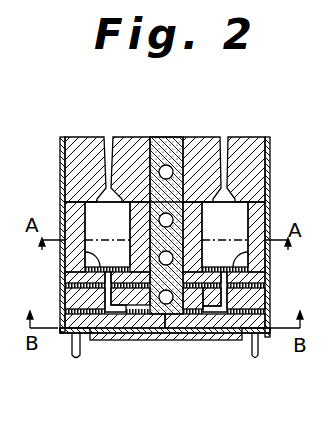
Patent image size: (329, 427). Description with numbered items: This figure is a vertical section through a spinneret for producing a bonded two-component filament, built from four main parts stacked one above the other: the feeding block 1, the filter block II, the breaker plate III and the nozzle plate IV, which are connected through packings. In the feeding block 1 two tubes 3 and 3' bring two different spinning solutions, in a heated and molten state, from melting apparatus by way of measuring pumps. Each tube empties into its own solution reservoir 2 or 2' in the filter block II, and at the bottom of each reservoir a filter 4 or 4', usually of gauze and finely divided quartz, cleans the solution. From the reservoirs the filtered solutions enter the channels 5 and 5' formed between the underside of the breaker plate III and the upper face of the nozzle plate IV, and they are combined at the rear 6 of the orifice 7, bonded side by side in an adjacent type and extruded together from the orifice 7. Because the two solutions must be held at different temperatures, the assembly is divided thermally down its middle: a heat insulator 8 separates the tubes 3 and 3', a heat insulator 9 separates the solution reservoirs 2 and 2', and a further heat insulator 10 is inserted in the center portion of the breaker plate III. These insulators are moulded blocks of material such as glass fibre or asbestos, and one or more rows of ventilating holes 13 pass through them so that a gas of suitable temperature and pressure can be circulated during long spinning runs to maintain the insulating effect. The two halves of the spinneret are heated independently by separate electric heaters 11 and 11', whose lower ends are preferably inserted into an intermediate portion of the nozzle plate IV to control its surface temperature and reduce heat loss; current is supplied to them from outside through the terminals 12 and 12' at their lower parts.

The housing 1 is at (258, 137).
The solution reservoir 2 is at (253, 231).
The solution reservoir 2' is at (76, 219).
The tube 3 is at (224, 145).
The tube 3' is at (107, 145).
The filter 4 is at (269, 258).
The filter 4' is at (57, 261).
The channel 5 is at (254, 291).
The channel 5' is at (119, 328).
The rear of the orifice 6 is at (178, 316).
The orifice 7 is at (168, 314).
The heat insulator 8 is at (167, 137).
The heat insulator 9 is at (152, 172).
The heat insulator 10 is at (80, 294).
The electric heater 11 is at (279, 356).
The electric heater 11' is at (64, 356).
The terminal 12 is at (261, 370).
The terminal 12' is at (89, 359).
The ventilating hole 13 is at (174, 165).
The filter block II is at (272, 200).
The breaker plate III is at (270, 302).
The nozzle plate IV is at (230, 316).